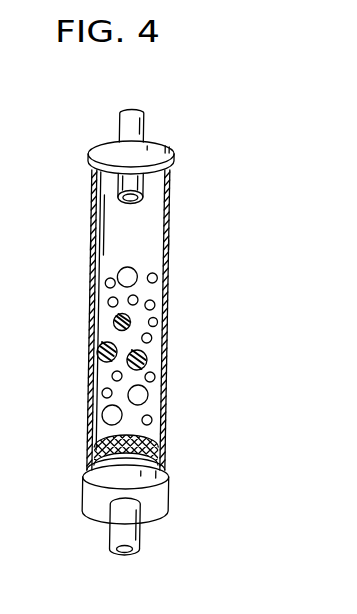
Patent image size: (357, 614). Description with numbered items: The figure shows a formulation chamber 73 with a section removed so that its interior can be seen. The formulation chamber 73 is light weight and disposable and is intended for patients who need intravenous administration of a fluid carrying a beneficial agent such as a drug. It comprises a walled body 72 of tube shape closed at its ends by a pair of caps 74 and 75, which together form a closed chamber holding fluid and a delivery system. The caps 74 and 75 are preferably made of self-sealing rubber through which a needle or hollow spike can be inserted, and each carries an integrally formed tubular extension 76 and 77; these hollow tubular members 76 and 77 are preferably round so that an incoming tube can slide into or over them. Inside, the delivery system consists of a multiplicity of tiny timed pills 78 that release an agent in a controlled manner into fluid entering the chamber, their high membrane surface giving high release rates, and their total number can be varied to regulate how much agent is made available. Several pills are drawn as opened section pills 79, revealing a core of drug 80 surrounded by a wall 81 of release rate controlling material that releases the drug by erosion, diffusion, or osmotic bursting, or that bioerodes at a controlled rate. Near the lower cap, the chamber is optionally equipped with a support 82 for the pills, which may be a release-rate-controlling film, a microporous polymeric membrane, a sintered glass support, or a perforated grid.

The walled body 72 is at (170, 269).
The formulation chamber 73 is at (173, 243).
The cap 74 is at (173, 159).
The cap 75 is at (169, 478).
The tubular extension 76 is at (146, 113).
The tubular extension 77 is at (144, 532).
The tiny timed pills 78 is at (157, 320).
The opened section pills 79 is at (112, 327).
The core of drug 80 is at (100, 352).
The wall 81 is at (104, 365).
The support 82 is at (99, 442).